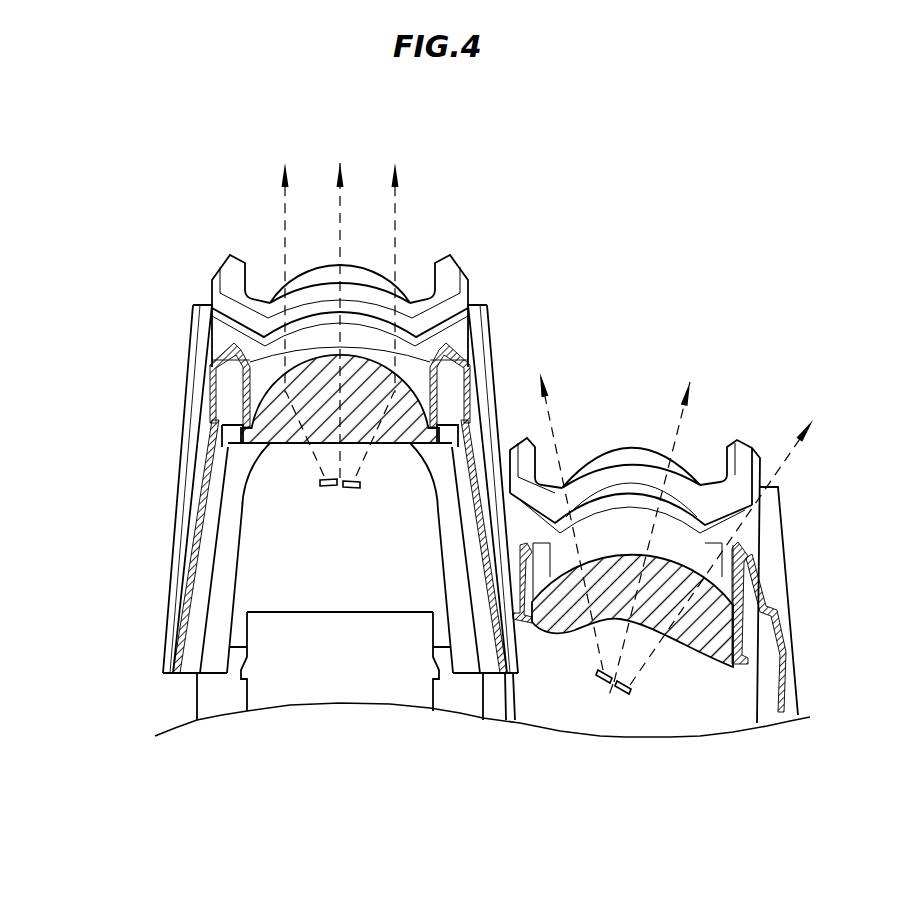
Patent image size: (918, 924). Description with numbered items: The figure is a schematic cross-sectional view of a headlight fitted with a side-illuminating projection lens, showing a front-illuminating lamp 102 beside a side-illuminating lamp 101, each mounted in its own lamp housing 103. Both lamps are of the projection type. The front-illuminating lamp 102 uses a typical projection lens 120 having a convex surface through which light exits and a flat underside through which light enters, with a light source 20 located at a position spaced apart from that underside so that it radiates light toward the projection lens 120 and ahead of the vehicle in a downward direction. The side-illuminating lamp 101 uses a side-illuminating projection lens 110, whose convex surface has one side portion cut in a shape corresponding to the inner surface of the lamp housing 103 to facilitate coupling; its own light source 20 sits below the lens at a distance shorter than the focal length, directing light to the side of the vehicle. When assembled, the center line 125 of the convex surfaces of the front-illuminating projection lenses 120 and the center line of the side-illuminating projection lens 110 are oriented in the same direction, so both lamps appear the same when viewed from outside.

The light source 20 is at (323, 484).
The side-illuminating lamp 101 is at (658, 806).
The front-illuminating lamp 102 is at (92, 495).
The lamp housing 103 is at (360, 292).
The side-illuminating projection lens 110 is at (673, 612).
The projection lens 120 is at (297, 415).
The center line 125 is at (342, 443).